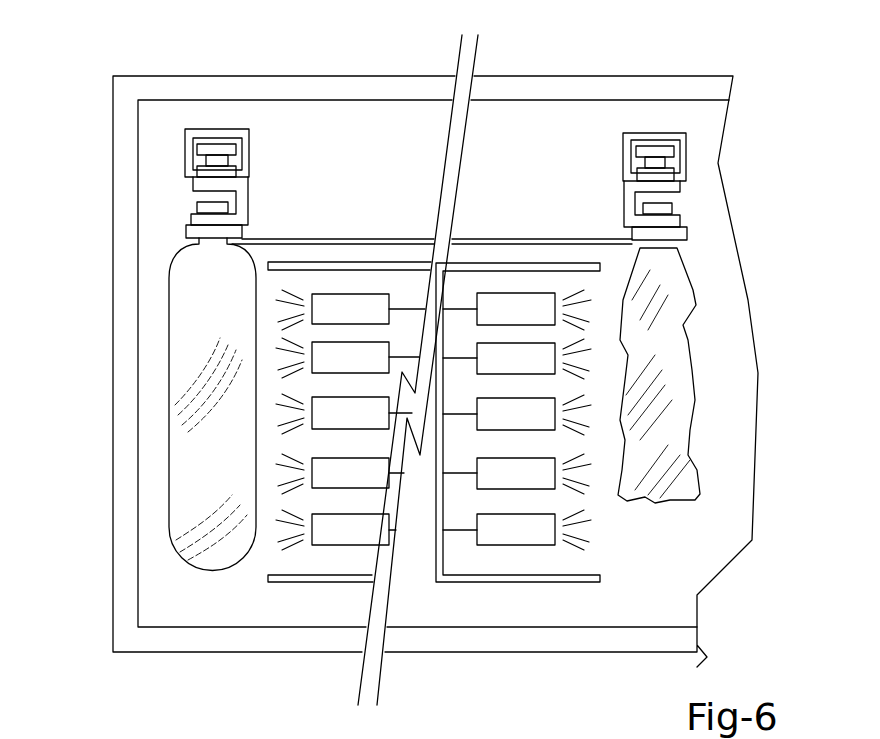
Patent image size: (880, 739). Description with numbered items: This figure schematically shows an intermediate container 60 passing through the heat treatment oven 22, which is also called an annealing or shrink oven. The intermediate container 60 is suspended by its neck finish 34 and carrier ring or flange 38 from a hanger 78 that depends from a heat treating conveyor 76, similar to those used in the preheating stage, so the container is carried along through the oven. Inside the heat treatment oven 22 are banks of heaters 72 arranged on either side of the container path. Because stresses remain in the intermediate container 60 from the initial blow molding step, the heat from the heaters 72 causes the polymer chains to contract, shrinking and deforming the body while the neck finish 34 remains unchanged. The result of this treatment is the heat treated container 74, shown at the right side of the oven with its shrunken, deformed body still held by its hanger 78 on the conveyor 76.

The heat treatment oven 22 is at (110, 160).
The neck finish 34 is at (182, 207).
The carrier ring or flange 38 is at (185, 232).
The intermediate container 60 is at (192, 430).
The banks of heaters 72 is at (330, 350).
The heat treated container 74 is at (670, 337).
The heat treating conveyor 76 is at (220, 131).
The hanger 78 is at (243, 205).